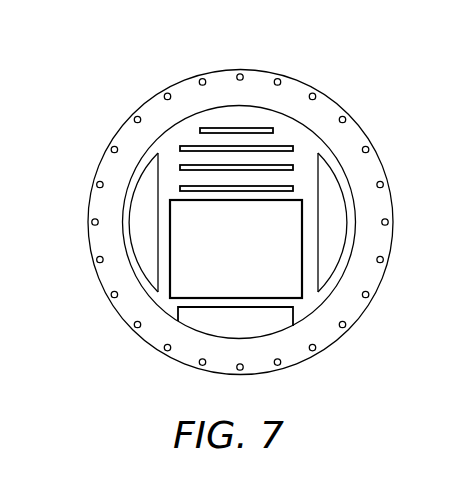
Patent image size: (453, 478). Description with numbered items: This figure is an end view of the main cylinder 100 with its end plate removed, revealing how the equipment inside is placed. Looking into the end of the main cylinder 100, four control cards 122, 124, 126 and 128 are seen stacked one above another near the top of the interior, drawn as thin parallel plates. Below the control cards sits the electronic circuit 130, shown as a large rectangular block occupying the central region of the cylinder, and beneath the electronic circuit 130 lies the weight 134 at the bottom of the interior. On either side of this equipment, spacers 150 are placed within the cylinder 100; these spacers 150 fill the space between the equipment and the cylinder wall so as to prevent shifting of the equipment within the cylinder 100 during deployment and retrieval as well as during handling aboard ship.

The main cylinder 100 is at (254, 70).
The control card 122 is at (210, 128).
The control card 124 is at (190, 145).
The control card 126 is at (185, 167).
The control card 128 is at (180, 187).
The electronic circuit 130 is at (253, 258).
The weight 134 is at (246, 330).
The spacers 150 is at (138, 217).